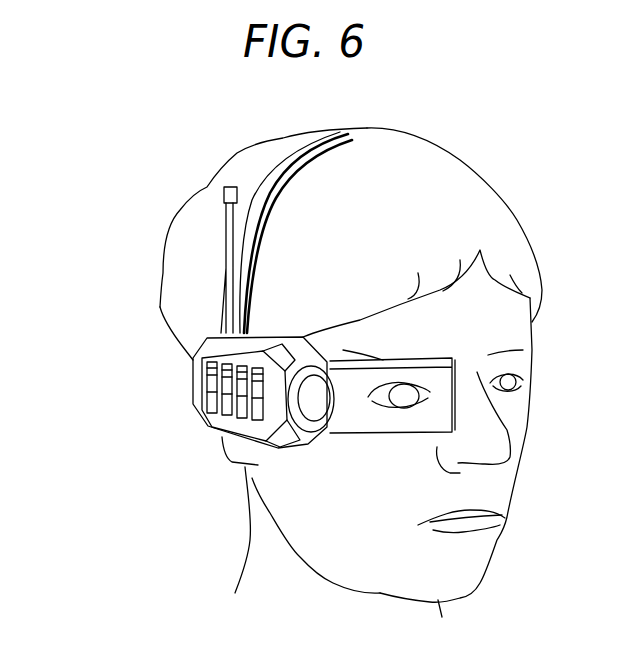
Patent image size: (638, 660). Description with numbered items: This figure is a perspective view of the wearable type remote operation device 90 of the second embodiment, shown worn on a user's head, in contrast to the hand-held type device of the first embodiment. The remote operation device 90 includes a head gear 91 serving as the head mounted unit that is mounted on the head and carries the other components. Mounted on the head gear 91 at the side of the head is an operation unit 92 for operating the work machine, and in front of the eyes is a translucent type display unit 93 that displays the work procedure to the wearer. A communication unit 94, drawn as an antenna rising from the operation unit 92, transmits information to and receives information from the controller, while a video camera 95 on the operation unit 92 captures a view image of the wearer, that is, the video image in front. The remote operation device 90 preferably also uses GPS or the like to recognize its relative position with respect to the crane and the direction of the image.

The remote operation device 90 is at (132, 338).
The head gear 91 is at (282, 168).
The operation unit 92 is at (194, 388).
The translucent type display unit 93 is at (430, 420).
The communication unit 94 is at (228, 229).
The video camera 95 is at (303, 447).